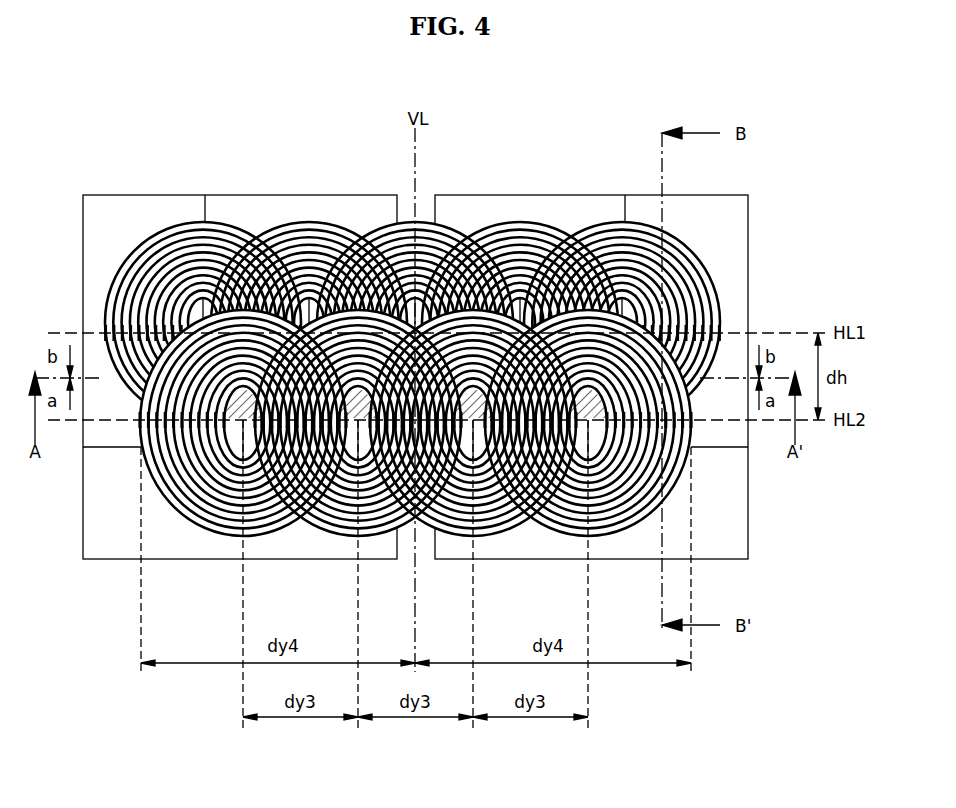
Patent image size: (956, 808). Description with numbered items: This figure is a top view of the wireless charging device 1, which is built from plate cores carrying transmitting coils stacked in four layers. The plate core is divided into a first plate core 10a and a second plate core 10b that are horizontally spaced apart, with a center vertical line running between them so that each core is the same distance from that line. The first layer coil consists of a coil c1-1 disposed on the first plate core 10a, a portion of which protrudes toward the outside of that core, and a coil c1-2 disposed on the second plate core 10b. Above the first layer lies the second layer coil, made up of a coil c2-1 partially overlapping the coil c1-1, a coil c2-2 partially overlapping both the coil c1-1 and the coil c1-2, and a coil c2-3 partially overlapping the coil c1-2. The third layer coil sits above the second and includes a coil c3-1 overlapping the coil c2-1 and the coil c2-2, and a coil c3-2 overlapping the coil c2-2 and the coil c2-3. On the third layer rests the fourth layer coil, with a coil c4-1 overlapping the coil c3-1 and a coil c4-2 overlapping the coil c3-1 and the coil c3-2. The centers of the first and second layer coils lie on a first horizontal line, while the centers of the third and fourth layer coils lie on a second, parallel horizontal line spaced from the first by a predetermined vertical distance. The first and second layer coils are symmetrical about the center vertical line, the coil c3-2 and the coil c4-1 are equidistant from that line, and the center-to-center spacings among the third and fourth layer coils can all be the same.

The wireless charging device 1 is at (70, 104).
The first plate core 10a is at (118, 222).
The second plate core 10b is at (713, 225).
The 1-1 coil c1-1 is at (310, 222).
The 1-2 coil c1-2 is at (512, 222).
The 2-1 coil c2-1 is at (194, 222).
The 2-2 coil c2-2 is at (400, 224).
The 2-3 coil c2-3 is at (611, 224).
The 3-1 coil c3-1 is at (328, 535).
The 3-2 coil c3-2 is at (615, 535).
The 4-1 coil c4-1 is at (200, 533).
The 4-2 coil c4-2 is at (500, 535).